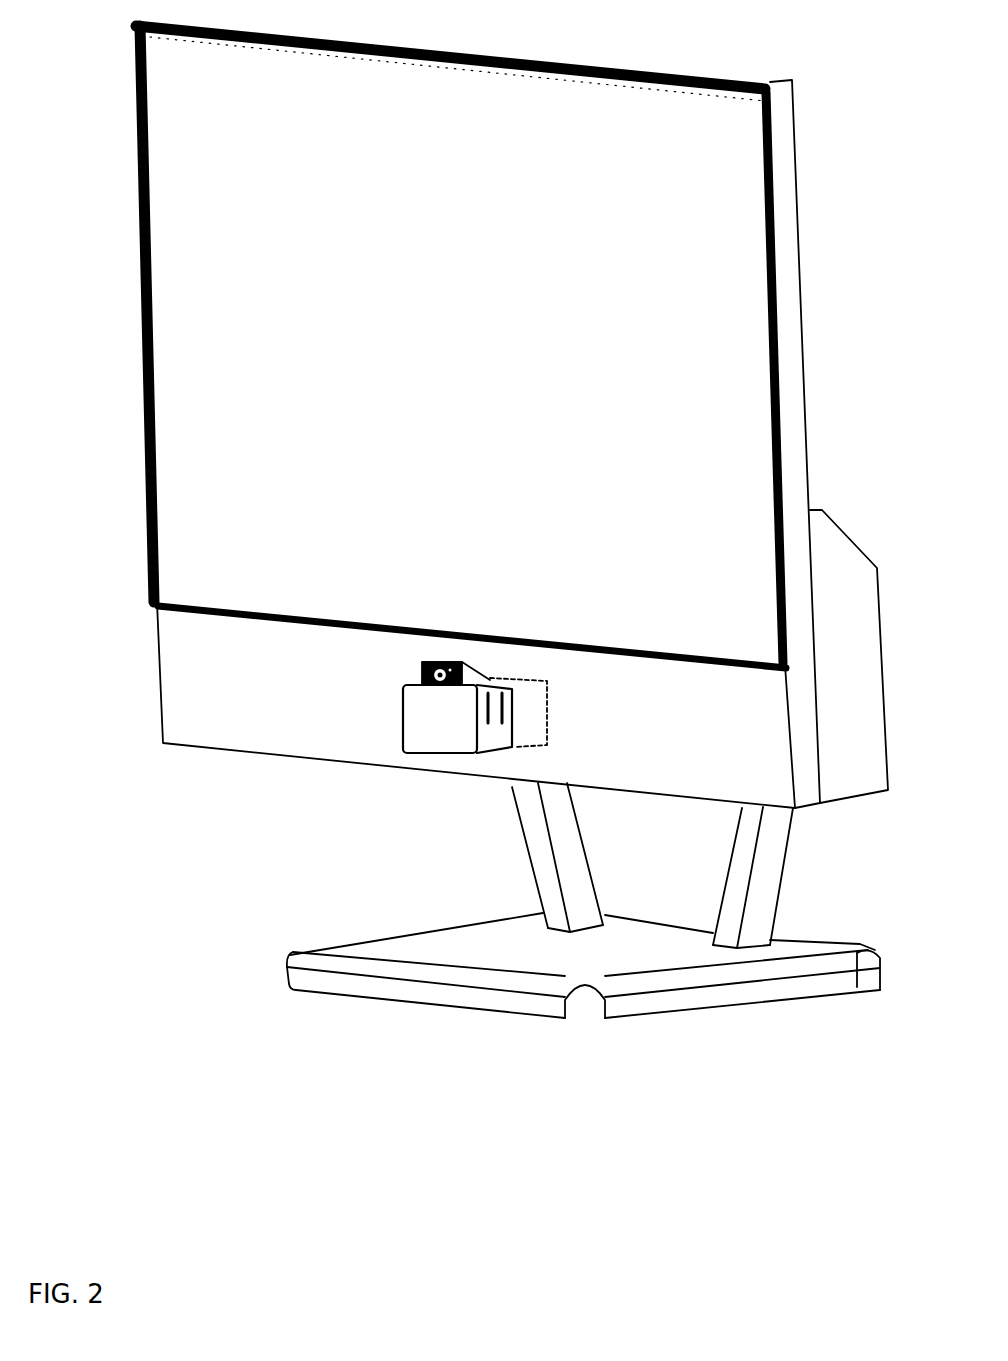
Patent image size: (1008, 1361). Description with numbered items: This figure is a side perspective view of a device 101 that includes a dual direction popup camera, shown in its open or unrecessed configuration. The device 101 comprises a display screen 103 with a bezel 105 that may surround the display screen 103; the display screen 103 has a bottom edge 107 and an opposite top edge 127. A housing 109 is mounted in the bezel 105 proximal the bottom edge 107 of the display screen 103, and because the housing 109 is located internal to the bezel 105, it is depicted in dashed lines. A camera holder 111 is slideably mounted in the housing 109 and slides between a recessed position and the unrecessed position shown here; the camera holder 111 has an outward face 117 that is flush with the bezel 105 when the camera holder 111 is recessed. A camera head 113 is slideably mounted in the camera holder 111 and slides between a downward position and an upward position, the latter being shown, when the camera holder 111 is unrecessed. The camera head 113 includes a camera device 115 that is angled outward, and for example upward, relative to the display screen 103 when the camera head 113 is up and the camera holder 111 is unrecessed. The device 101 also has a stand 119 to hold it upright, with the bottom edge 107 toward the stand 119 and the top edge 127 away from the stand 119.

The device 101 is at (172, 1124).
The display screen 103 is at (738, 280).
The bezel 105 is at (773, 792).
The bottom edge 107 is at (325, 618).
The housing 109 is at (540, 737).
The camera holder 111 is at (414, 716).
The camera head 113 is at (420, 665).
The camera device 115 is at (450, 670).
The outward face 117 is at (440, 719).
The stand 119 is at (773, 998).
The top edge 127 is at (400, 60).